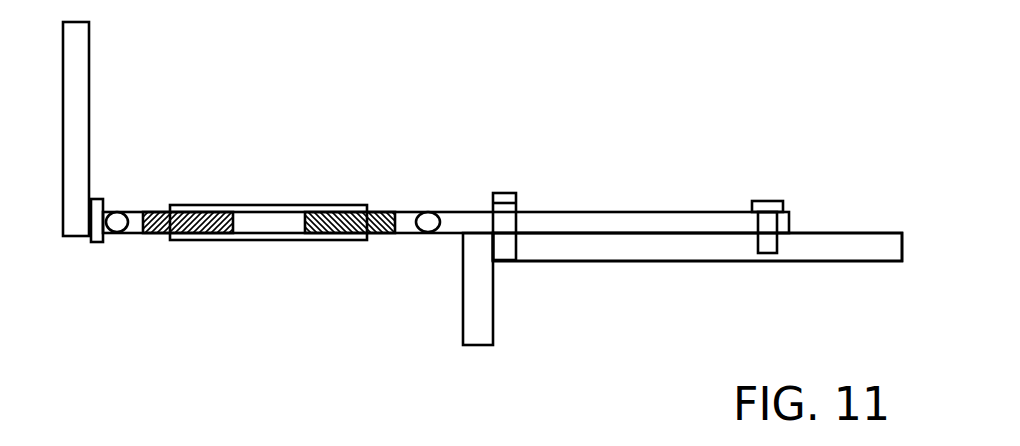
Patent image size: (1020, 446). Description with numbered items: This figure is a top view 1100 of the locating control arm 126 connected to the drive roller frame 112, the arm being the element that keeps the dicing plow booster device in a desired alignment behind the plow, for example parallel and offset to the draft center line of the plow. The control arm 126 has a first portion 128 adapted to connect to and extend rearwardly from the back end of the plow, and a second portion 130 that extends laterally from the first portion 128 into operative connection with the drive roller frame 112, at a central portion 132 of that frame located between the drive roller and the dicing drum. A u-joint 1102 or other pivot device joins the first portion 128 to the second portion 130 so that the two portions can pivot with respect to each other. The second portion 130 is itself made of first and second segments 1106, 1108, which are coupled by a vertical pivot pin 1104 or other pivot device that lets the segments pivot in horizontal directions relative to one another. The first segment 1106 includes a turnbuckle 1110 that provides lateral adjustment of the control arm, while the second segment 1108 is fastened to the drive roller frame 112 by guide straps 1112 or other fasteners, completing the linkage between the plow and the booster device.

The top view 1100 is at (762, 74).
The locating control arm 126 is at (278, 122).
The first portion 128 is at (89, 88).
The second portion 130 is at (580, 211).
The central portion 132 is at (765, 281).
The drive roller frame 112 is at (710, 261).
The u-joint 1102 is at (99, 248).
The vertical pivot pin 1104 is at (428, 200).
The first segment 1106 is at (396, 211).
The second segment 1108 is at (462, 211).
The turnbuckle 1110 is at (260, 241).
The guide straps 1112 is at (497, 193).